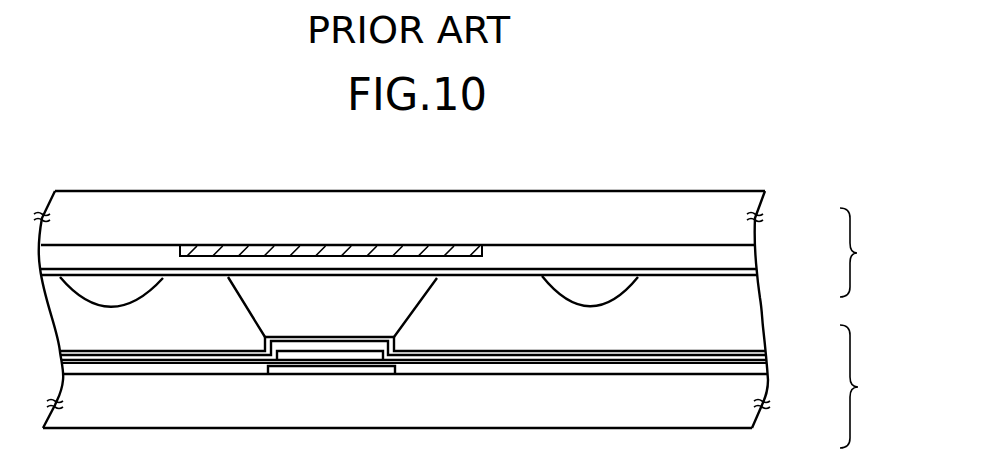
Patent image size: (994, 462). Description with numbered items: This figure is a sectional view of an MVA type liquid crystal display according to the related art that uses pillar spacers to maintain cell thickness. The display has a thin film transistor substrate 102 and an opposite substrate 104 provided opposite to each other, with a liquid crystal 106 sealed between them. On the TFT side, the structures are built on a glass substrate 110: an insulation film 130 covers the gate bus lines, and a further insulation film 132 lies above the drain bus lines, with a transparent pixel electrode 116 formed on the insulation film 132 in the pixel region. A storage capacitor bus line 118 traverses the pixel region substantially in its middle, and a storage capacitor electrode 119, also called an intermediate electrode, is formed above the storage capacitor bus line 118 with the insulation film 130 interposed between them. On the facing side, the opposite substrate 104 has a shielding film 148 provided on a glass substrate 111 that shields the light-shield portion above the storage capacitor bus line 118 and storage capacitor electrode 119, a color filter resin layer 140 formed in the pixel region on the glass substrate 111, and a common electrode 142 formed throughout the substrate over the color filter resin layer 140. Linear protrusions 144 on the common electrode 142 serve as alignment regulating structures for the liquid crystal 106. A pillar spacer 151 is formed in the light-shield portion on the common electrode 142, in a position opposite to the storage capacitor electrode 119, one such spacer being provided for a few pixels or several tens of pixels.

The thin film transistor substrate 102 is at (874, 386).
The opposite substrate 104 is at (875, 252).
The liquid crystal 106 is at (760, 298).
The glass substrate 110 is at (757, 420).
The glass substrate 111 is at (753, 235).
The transparent pixel electrode 116 is at (767, 352).
The storage capacitor bus line 118 is at (372, 370).
The storage capacitor electrode 119 is at (323, 358).
The insulation film 130 is at (768, 370).
The insulation film 132 is at (768, 358).
The color filter resin layer 140 is at (755, 263).
The common electrode 142 is at (757, 273).
The linear protrusion 144 is at (138, 290).
The shielding film 148 is at (400, 243).
The pillar spacer 151 is at (413, 305).